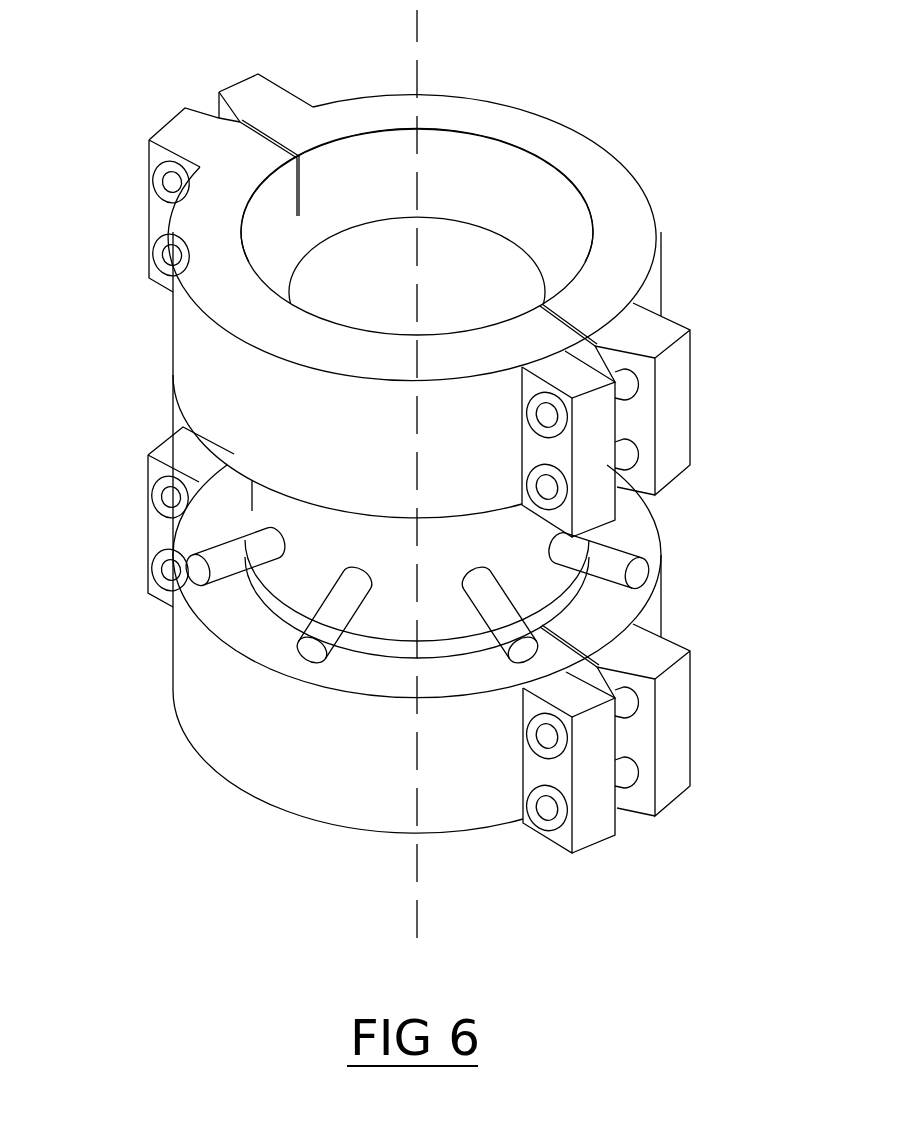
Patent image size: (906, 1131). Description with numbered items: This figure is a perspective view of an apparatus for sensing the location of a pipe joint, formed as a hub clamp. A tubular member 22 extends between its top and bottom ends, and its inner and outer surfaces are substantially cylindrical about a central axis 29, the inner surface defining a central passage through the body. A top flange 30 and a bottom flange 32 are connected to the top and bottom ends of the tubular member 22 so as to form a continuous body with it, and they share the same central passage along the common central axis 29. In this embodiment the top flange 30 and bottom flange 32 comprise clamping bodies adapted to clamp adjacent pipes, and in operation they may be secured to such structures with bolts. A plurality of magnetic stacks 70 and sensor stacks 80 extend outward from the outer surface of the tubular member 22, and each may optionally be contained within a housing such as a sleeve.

The central axis 29 is at (421, 27).
The top flange 30 is at (563, 117).
The bottom flange 32 is at (490, 828).
The tubular member 22 is at (547, 573).
The magnetic stack 70 is at (292, 662).
The sensor stack 80 is at (200, 585).